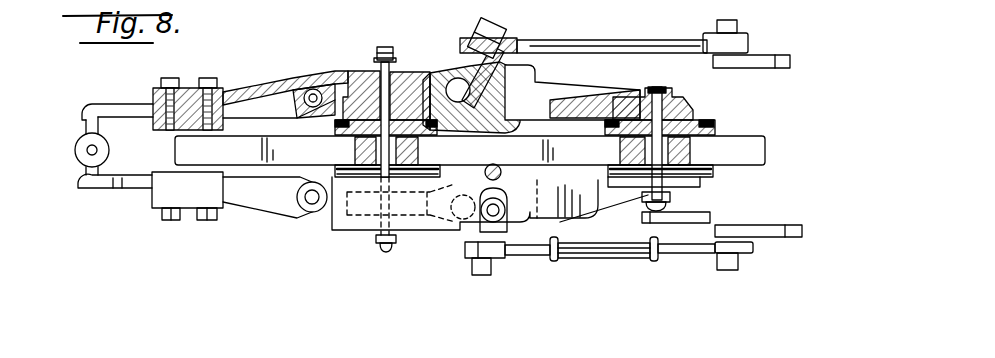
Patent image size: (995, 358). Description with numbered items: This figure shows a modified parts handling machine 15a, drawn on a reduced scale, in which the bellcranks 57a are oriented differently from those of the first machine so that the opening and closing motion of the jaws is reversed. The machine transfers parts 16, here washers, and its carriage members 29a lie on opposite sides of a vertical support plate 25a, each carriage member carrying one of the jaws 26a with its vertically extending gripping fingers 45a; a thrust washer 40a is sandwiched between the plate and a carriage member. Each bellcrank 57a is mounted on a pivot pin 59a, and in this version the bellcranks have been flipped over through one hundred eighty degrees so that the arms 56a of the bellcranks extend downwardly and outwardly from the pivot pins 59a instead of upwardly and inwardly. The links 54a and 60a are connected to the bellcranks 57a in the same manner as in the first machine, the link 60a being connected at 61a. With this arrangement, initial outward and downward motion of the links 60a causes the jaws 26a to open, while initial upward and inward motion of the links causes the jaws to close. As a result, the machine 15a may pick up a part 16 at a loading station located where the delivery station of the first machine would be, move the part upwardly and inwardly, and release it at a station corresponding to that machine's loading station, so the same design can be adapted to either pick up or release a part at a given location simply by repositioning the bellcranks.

The part 16 is at (76, 163).
The beam 25a is at (740, 160).
The jaw 26a is at (293, 57).
The lower arm 45a is at (103, 192).
The bellcrank arm 56a is at (403, 124).
The bellcrank 57a is at (466, 63).
The link 54a is at (480, 77).
The nut 61a is at (517, 43).
The link 60a is at (565, 42).
The pivot pin 59a is at (506, 90).
The wedge slot 29a is at (568, 94).
The parts handling machine 15a is at (450, 258).
The hub bolt assembly 40a is at (710, 127).